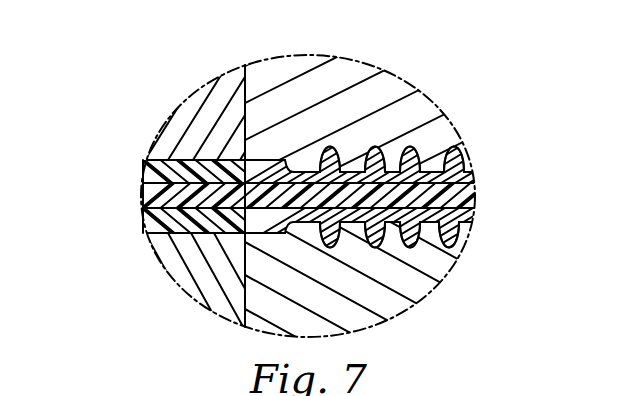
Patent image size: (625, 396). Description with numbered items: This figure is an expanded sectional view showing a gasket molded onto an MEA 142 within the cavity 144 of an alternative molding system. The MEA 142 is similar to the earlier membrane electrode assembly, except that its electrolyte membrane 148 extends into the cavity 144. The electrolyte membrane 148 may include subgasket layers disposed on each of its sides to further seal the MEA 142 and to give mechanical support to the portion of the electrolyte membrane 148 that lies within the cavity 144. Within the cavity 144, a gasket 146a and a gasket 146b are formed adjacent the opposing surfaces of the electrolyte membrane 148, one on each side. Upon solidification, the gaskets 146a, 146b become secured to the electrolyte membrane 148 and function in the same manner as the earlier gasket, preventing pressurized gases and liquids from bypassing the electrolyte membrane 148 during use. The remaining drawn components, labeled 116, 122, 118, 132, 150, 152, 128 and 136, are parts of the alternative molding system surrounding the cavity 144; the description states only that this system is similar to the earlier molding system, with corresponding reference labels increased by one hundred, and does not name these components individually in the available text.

The MEA 142 is at (86, 172).
The first core portion 116 is at (190, 107).
The second core portion 122 is at (336, 76).
The first facesheet portion 118 is at (198, 272).
The second facesheet portion 132 is at (382, 302).
The upper skin layer 150 is at (145, 170).
The electrolyte membrane 148 is at (143, 197).
The lower skin layer 152 is at (142, 220).
The cavity 144 is at (494, 194).
The upper surface of insert 128 is at (484, 155).
The lower surface of insert 136 is at (486, 233).
The gasket 146a is at (400, 170).
The gasket 146b is at (422, 215).